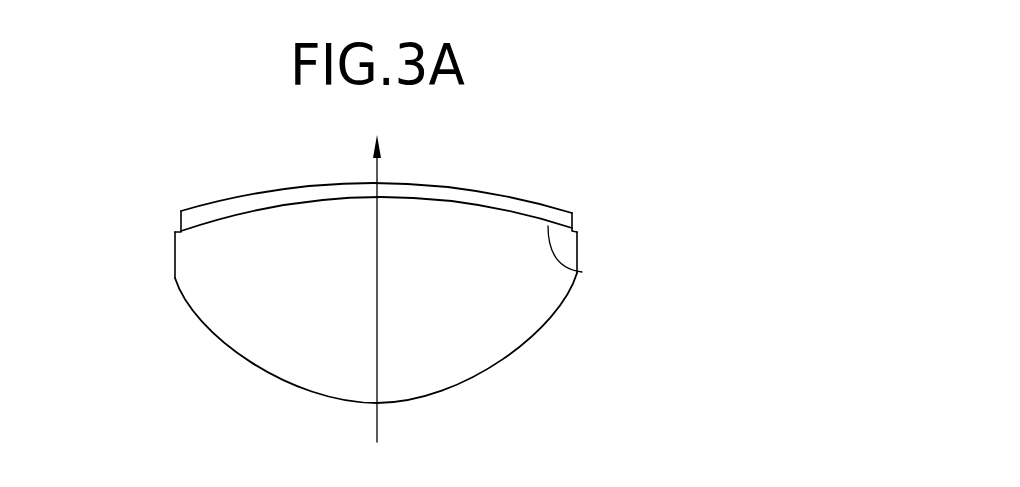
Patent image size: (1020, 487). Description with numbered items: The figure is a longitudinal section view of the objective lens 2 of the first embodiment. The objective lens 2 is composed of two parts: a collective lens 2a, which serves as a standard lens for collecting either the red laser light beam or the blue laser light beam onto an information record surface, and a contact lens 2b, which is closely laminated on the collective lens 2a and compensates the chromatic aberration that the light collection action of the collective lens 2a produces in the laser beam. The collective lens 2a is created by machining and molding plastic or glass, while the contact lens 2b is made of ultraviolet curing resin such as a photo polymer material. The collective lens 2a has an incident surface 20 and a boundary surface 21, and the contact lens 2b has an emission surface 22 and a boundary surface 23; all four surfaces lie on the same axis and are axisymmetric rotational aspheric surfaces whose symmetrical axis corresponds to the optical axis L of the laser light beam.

The objective lens 2 is at (343, 291).
The collective lens 2a is at (332, 332).
The contact lens 2b is at (366, 189).
The incident surface 20 is at (474, 379).
The boundary surface 21 is at (560, 227).
The emission surface 22 is at (560, 209).
The boundary surface 23 is at (582, 273).
The optical axis L is at (378, 230).